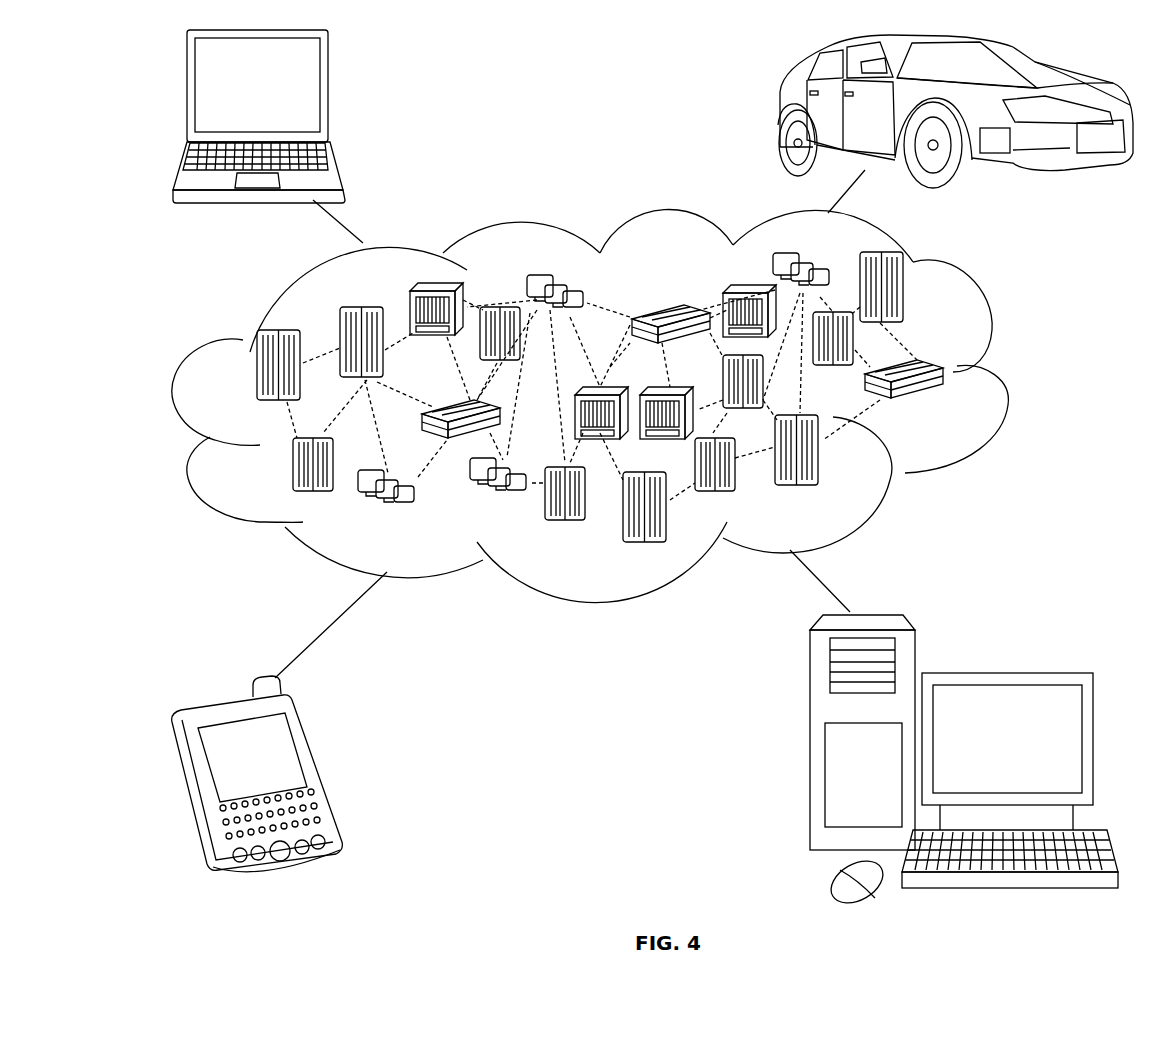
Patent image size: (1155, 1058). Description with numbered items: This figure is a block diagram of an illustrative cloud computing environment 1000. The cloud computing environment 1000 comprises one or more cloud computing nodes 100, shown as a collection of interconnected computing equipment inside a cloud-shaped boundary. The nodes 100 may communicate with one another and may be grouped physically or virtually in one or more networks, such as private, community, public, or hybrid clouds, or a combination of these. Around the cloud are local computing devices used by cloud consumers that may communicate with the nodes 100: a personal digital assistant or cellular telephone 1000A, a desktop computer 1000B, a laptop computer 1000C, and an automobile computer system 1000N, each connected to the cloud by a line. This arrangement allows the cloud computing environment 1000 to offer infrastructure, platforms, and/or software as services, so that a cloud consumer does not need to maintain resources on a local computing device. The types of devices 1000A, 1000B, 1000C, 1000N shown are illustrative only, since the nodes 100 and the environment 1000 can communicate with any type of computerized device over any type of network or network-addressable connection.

The cloud computing nodes 100 is at (962, 411).
The cloud computing environment 1000 is at (1005, 374).
The personal digital assistant (PDA) or cellular telephone 1000A is at (318, 770).
The desktop computer 1000B is at (1006, 673).
The laptop computer 1000C is at (332, 93).
The automobile computer system 1000N is at (780, 110).